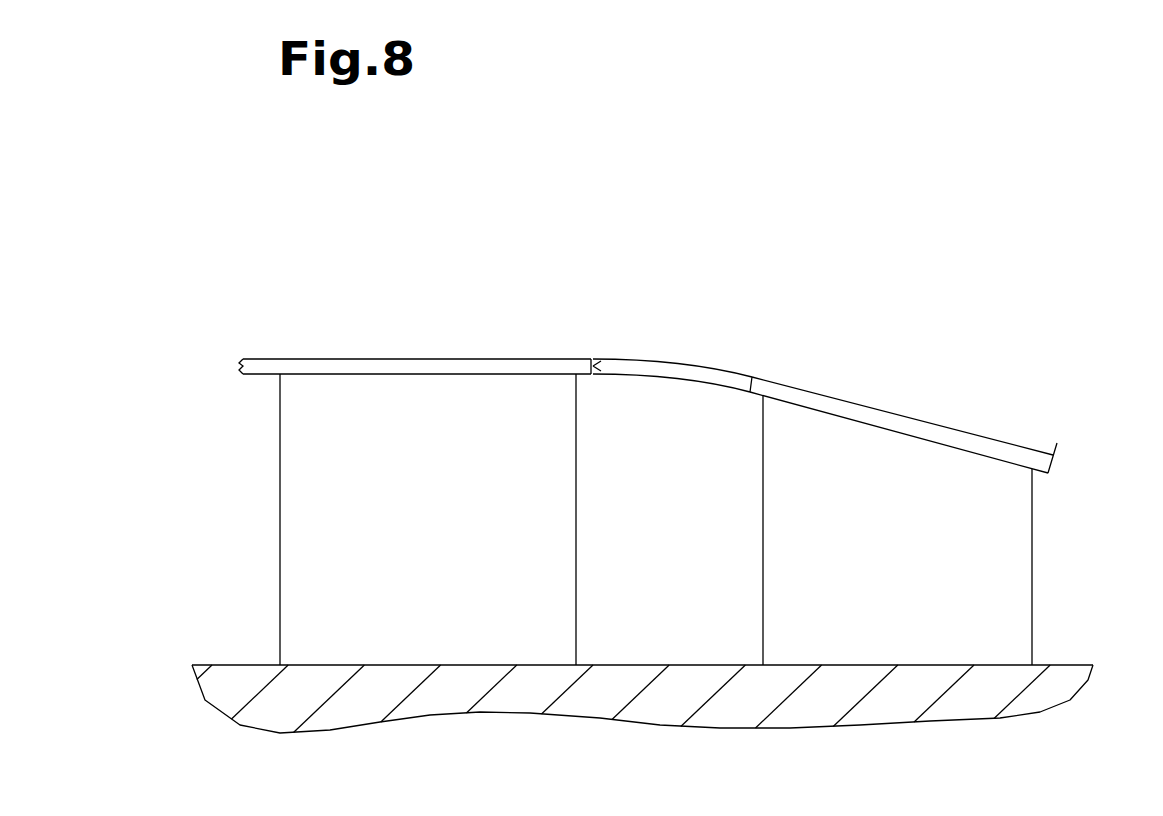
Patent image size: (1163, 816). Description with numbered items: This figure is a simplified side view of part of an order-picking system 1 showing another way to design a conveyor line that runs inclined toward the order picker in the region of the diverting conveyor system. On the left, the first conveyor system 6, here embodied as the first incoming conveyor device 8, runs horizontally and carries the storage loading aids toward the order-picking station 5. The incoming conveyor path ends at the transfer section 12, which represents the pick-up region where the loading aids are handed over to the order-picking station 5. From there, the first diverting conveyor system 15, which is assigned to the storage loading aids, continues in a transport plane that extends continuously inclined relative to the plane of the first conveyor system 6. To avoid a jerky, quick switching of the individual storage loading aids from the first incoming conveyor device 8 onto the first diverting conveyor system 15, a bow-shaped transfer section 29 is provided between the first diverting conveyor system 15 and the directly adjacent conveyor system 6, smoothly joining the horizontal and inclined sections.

The order-picking system 1 is at (878, 192).
The order-picking station 5 is at (1062, 313).
The first conveyor system 6 is at (348, 282).
The first incoming conveyor device 8 is at (416, 366).
The transfer section 12 is at (603, 357).
The first diverting conveyor system 15 is at (945, 397).
The bow-shaped transfer section 29 is at (677, 368).